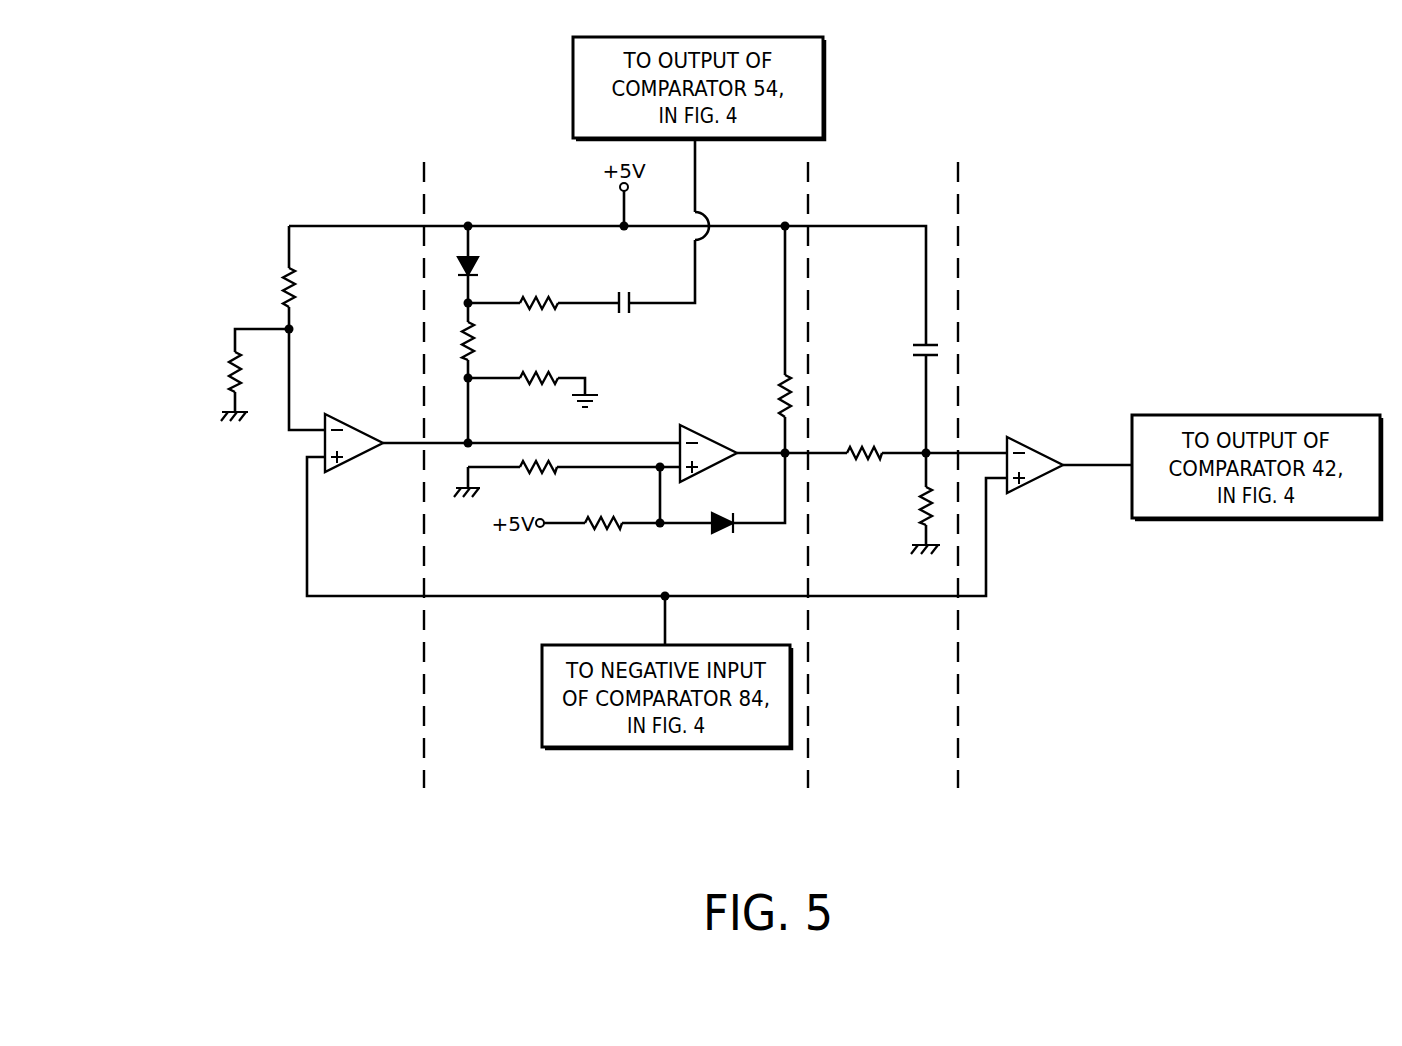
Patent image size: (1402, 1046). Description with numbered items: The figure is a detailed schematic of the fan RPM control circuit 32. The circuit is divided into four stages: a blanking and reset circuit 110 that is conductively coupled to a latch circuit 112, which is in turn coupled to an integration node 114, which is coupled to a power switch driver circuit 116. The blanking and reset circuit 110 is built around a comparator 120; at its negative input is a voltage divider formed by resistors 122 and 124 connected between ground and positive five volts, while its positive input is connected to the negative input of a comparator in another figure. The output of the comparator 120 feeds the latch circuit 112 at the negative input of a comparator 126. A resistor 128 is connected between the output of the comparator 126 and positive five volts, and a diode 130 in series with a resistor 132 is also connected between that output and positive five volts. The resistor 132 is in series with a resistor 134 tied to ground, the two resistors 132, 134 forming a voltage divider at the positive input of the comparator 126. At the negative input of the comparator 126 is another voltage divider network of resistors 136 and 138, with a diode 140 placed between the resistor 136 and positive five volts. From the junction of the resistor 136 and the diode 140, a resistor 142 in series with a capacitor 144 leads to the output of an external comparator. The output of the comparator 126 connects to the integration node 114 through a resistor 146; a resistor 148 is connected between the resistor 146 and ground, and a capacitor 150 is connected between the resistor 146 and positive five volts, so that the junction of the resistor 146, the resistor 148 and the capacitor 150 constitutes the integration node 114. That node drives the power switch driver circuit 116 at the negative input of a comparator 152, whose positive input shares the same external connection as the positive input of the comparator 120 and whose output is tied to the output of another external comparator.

The fan RPM control circuit 32 is at (797, 866).
The blanking and reset circuit 110 is at (332, 717).
The latch circuit 112 is at (597, 793).
The integration node 114 is at (902, 717).
The power switch driver circuit 116 is at (1030, 717).
The comparator 120 is at (355, 423).
The resistor 122 is at (229, 372).
The resistor 124 is at (283, 289).
The comparator 126 is at (711, 433).
The resistor 128 is at (780, 381).
The diode 130 is at (720, 512).
The resistor 132 is at (599, 516).
The resistor 134 is at (542, 473).
The resistor 136 is at (478, 340).
The resistor 138 is at (549, 371).
The diode 140 is at (478, 264).
The resistor 142 is at (549, 296).
The capacitor 144 is at (633, 293).
The resistor 146 is at (861, 445).
The resistor 148 is at (916, 507).
The capacitor 150 is at (916, 347).
The comparator 152 is at (1036, 444).